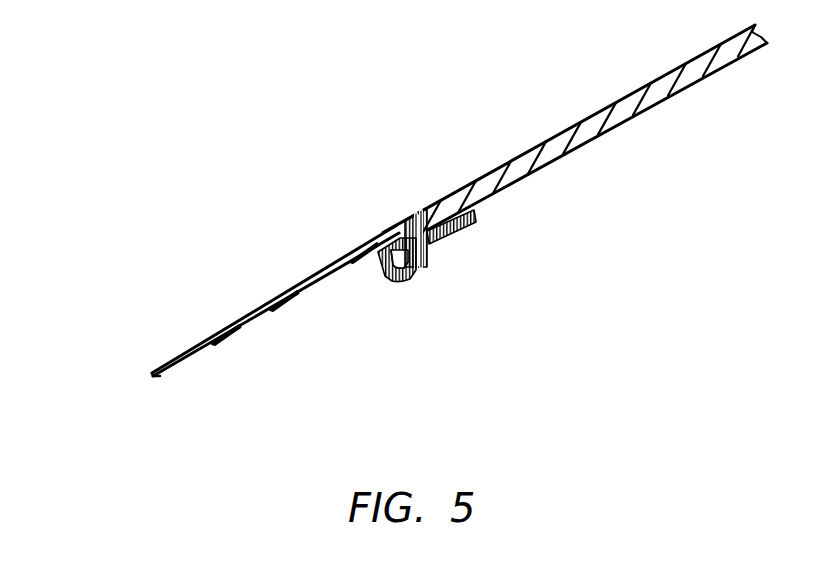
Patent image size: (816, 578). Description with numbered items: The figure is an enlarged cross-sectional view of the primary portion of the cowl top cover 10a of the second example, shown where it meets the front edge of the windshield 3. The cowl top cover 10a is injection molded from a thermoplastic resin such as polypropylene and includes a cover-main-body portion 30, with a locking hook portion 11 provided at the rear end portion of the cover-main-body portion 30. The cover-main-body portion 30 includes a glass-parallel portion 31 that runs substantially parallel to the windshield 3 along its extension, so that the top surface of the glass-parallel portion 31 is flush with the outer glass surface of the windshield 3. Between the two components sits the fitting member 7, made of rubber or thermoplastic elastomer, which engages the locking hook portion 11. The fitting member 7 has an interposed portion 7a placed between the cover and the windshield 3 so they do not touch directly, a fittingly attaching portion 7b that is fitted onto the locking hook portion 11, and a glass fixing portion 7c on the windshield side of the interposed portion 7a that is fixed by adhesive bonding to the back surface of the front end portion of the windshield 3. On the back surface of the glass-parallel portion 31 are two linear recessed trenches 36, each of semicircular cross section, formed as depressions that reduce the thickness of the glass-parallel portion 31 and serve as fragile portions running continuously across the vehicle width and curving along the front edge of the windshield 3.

The windshield 3 is at (613, 133).
The fitting member 7 is at (454, 306).
The interposed portion 7a is at (432, 248).
The fittingly attaching portion 7b is at (410, 298).
The glass fixing portion 7c is at (467, 232).
The cowl top cover 10a is at (162, 210).
The locking hook portion 11 is at (403, 243).
The cover-main-body portion 30 is at (148, 374).
The glass-parallel portion 31 is at (258, 306).
The recessed trenches 36 is at (227, 333).